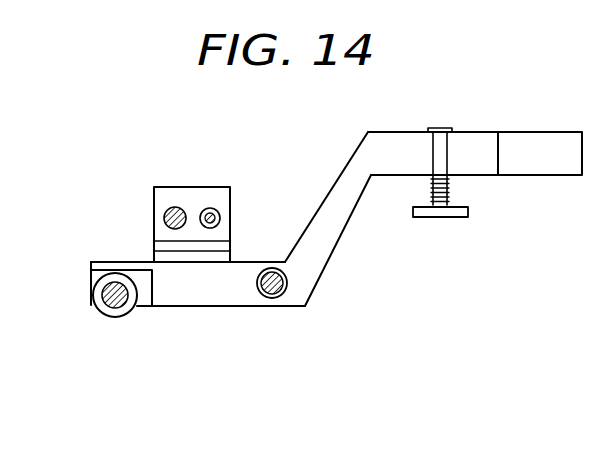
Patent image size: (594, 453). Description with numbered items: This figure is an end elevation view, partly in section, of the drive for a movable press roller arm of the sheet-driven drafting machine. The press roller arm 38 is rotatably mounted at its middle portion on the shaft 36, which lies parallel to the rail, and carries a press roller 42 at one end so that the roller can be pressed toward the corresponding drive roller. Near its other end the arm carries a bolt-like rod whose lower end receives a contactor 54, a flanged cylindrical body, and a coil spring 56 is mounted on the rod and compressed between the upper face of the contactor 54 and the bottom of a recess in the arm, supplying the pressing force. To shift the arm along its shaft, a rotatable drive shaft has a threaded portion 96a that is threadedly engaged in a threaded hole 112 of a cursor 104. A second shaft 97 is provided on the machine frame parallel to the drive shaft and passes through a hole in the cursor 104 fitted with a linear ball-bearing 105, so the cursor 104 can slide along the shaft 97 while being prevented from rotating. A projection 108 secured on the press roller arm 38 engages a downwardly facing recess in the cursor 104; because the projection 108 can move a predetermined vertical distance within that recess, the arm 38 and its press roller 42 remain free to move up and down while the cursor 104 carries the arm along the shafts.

The shaft 36 is at (285, 289).
The press roller arm 38 is at (398, 143).
The press roller 42 is at (120, 317).
The contactor 54 is at (447, 217).
The coil spring 56 is at (453, 187).
The threaded portion 96a is at (165, 217).
The shaft 97 is at (210, 228).
The cursor 104 is at (160, 187).
The linear ball-bearing 105 is at (272, 268).
The projection 108 is at (160, 255).
The threaded hole 112 is at (183, 210).